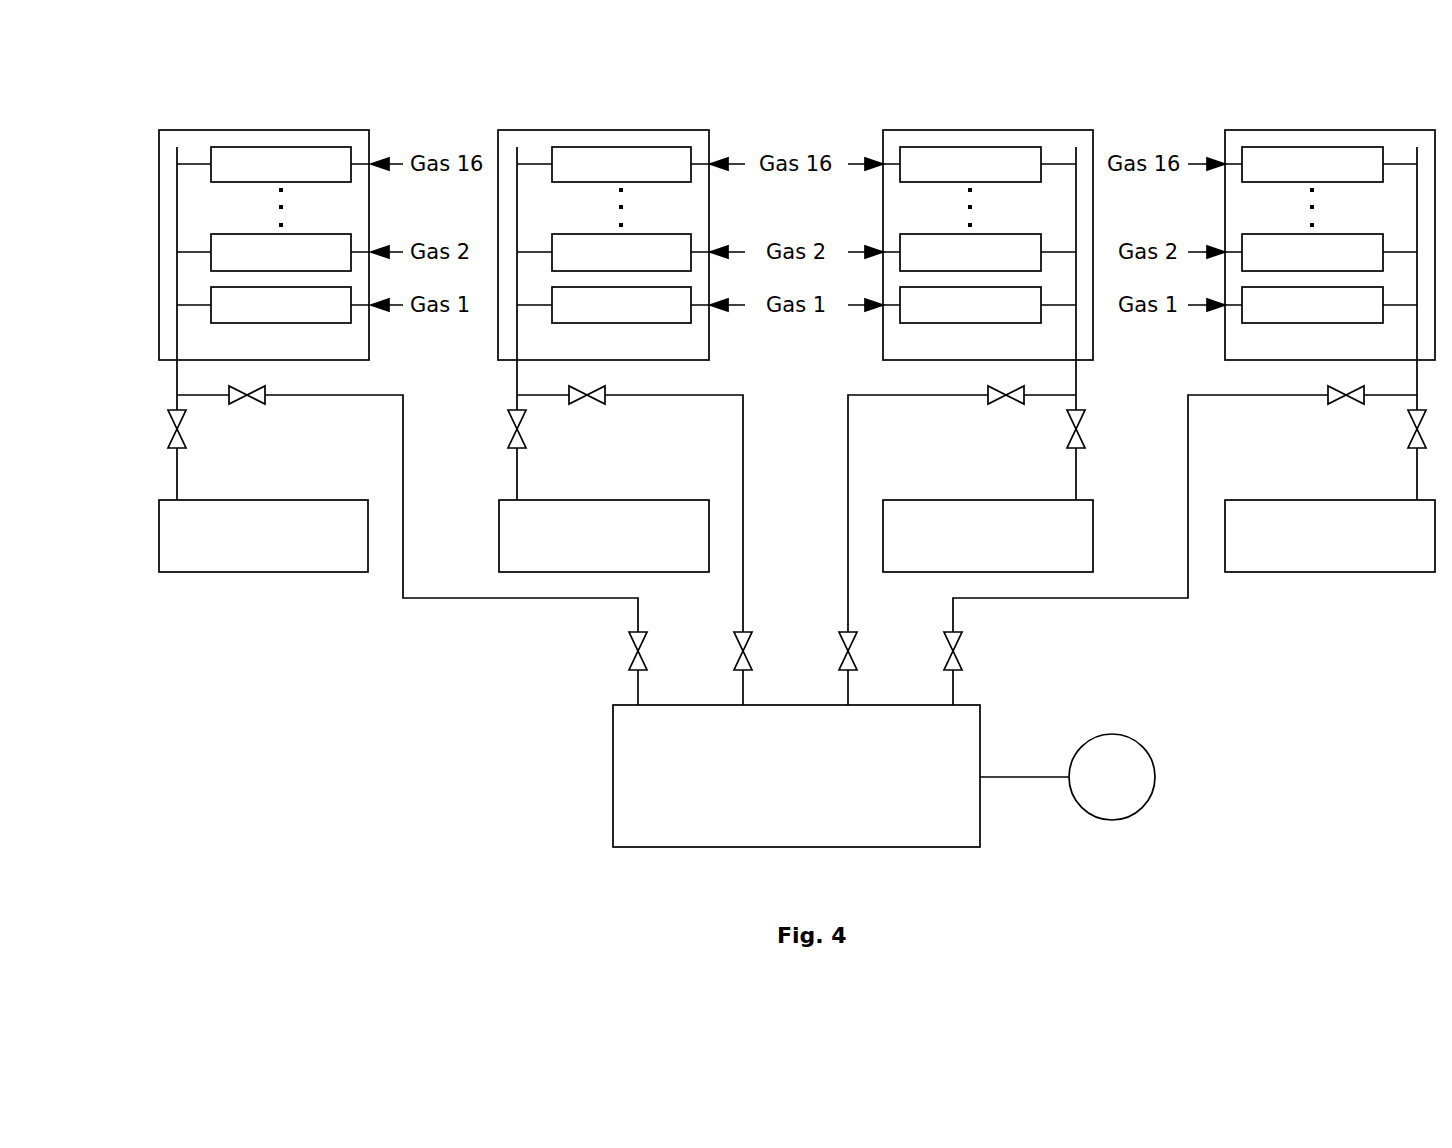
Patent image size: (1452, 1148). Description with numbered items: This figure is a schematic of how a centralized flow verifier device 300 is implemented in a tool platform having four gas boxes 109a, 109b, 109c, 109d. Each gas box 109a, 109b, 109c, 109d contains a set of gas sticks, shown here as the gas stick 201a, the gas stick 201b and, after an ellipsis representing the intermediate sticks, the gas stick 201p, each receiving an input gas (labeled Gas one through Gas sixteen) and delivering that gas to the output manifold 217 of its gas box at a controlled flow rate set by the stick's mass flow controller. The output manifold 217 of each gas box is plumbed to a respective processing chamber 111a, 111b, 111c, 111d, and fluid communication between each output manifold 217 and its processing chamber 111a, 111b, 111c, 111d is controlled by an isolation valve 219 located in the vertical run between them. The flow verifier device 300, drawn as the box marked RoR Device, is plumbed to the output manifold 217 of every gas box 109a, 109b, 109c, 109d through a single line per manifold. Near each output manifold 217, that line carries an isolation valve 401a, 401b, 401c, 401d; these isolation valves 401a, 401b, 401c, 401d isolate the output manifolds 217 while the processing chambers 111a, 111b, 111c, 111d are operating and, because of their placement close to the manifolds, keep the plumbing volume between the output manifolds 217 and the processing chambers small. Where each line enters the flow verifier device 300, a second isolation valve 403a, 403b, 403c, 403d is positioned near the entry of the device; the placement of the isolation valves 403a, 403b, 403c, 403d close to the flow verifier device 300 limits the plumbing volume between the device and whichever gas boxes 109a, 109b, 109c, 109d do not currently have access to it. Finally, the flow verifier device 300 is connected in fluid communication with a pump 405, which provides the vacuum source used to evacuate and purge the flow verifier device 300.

The gas box 109a is at (282, 130).
The gas box 109b is at (622, 130).
The gas box 109c is at (971, 130).
The gas box 109d is at (1312, 130).
The gas stick 201p is at (797, 164).
The gas stick 201b is at (797, 252).
The gas stick 201a is at (797, 305).
The output manifold 217 is at (177, 213).
The isolation valve 219 is at (183, 440).
The isolation valve 401a is at (247, 404).
The isolation valve 401b is at (587, 404).
The isolation valve 401c is at (1006, 404).
The isolation valve 401d is at (1346, 404).
The processing chamber 111a is at (265, 500).
The processing chamber 111b is at (605, 500).
The processing chamber 111c is at (990, 500).
The processing chamber 111d is at (1331, 500).
The isolation valve 403a is at (630, 660).
The isolation valve 403b is at (735, 660).
The isolation valve 403c is at (840, 660).
The isolation valve 403d is at (945, 660).
The flow verifier device 300 is at (796, 776).
The pump 405 is at (1112, 742).